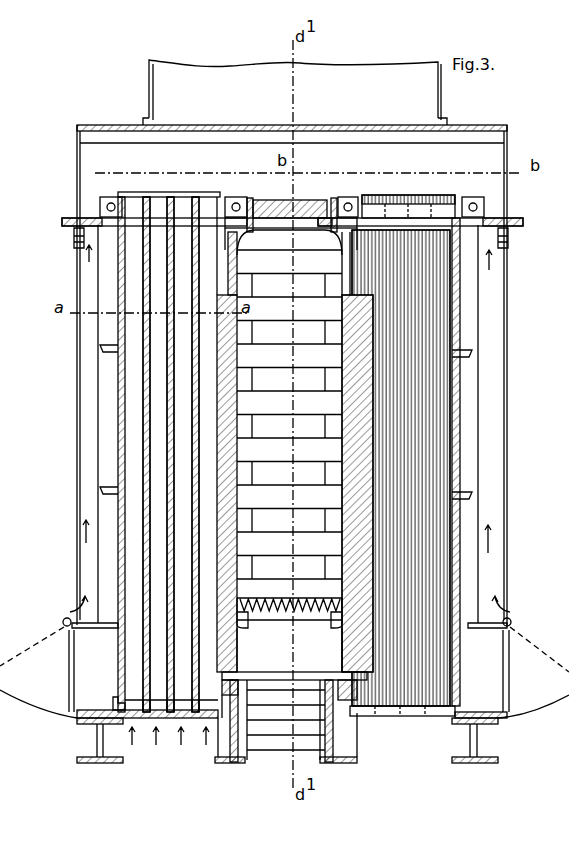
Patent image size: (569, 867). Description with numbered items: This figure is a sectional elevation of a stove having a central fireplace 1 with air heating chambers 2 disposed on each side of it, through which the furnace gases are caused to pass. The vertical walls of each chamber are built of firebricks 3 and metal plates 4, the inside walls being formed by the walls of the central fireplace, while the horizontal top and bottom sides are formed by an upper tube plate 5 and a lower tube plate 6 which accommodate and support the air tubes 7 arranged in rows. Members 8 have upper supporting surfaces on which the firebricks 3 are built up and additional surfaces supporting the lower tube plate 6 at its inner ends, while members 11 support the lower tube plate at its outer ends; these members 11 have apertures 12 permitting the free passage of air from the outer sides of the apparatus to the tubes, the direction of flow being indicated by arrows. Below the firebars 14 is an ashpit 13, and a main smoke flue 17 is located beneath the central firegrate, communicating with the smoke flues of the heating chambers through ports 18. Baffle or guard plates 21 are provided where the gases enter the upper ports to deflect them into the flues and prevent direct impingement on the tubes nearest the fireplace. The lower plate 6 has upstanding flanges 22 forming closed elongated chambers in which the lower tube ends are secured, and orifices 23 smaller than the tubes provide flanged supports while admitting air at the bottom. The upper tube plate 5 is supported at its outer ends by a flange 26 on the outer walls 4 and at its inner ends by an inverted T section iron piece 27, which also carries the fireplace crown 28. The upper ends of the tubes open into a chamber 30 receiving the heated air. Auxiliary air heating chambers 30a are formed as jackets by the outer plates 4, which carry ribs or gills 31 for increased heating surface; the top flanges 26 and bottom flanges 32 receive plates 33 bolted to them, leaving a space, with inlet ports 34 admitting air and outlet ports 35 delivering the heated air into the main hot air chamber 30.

The central fireplace 1 is at (318, 468).
The air heating chambers 2 is at (156, 457).
The bricks 3 is at (350, 355).
The metal plates 4 is at (118, 374).
The upper tube plate 5 is at (110, 215).
The lower tube plate 6 is at (150, 718).
The air tubes 7 is at (157, 282).
The members 8 is at (218, 760).
The members 11 is at (95, 762).
The openings or apertures 12 is at (108, 740).
The ashpit 13 is at (289, 646).
The firebars 14 is at (305, 598).
The main smoke flue 17 is at (278, 735).
The ports 18 is at (340, 702).
The baffle or guard plates 21 is at (218, 232).
The upstanding flanges 22 is at (116, 700).
The orifices 23 is at (177, 712).
The flange 26 is at (100, 218).
The inverted T section iron piece 27 is at (334, 205).
The fireplace crown 28 is at (291, 244).
The chamber 30 is at (440, 160).
The auxiliary air heating chambers 30a is at (510, 447).
The ribs or gills 31 is at (100, 492).
The flanges 32 is at (63, 623).
The plates 33 is at (78, 352).
The inlet ports 34 is at (72, 601).
The outlet ports 35 is at (78, 234).